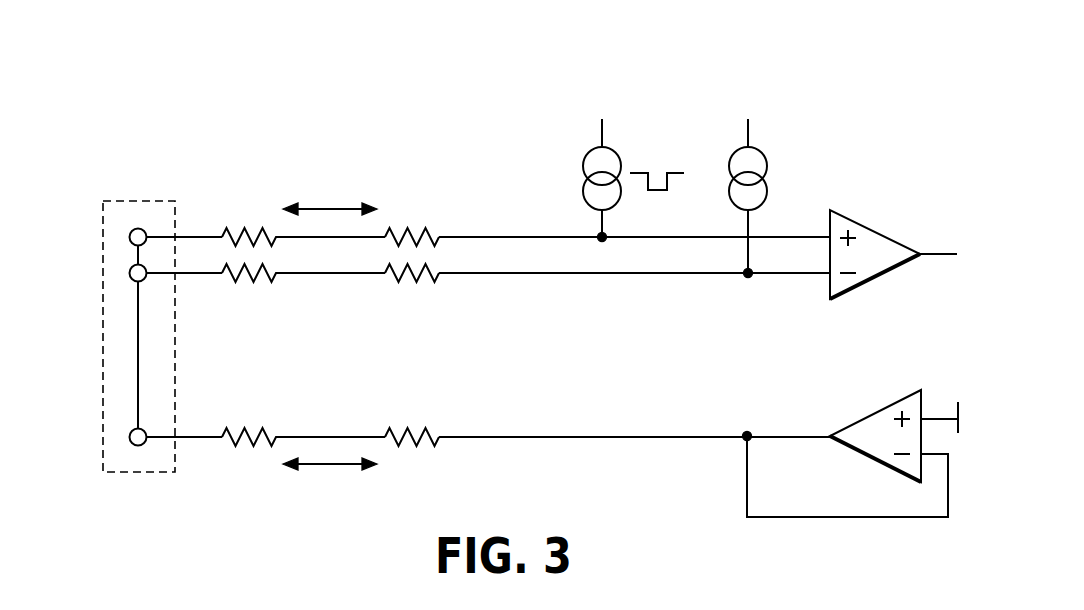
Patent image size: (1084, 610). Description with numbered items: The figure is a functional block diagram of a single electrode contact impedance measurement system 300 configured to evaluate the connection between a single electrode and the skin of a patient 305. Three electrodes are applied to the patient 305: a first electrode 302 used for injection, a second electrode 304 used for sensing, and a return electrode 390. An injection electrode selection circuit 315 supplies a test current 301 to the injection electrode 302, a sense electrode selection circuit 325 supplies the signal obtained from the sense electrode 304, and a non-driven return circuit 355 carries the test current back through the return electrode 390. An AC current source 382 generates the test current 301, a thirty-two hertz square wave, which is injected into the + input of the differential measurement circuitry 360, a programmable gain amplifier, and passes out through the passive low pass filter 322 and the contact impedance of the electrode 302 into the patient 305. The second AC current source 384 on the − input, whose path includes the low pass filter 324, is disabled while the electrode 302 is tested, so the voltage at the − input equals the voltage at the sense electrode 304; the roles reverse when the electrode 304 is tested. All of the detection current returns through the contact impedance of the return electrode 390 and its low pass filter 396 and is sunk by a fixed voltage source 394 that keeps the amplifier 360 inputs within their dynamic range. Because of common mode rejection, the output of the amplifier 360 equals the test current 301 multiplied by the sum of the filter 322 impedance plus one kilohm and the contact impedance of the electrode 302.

The single electrode contact impedance measurement system 300 is at (345, 114).
The test current 301 is at (330, 207).
The first electrode 302 is at (129, 237).
The second electrode 304 is at (129, 273).
The patient 305 is at (140, 200).
The injection electrode selection circuit 315 is at (501, 205).
The low pass filter 322 is at (413, 226).
The low pass filter 324 is at (420, 284).
The sense electrode selection circuit 325 is at (620, 292).
The non-driven return circuit 355 is at (620, 460).
The differential measurement circuitry 360 is at (875, 228).
The AC current source 382 is at (618, 164).
The AC current source 384 is at (764, 164).
The return electrode 390 is at (129, 437).
The fixed voltage source 394 is at (880, 410).
The low pass filter 396 is at (415, 426).